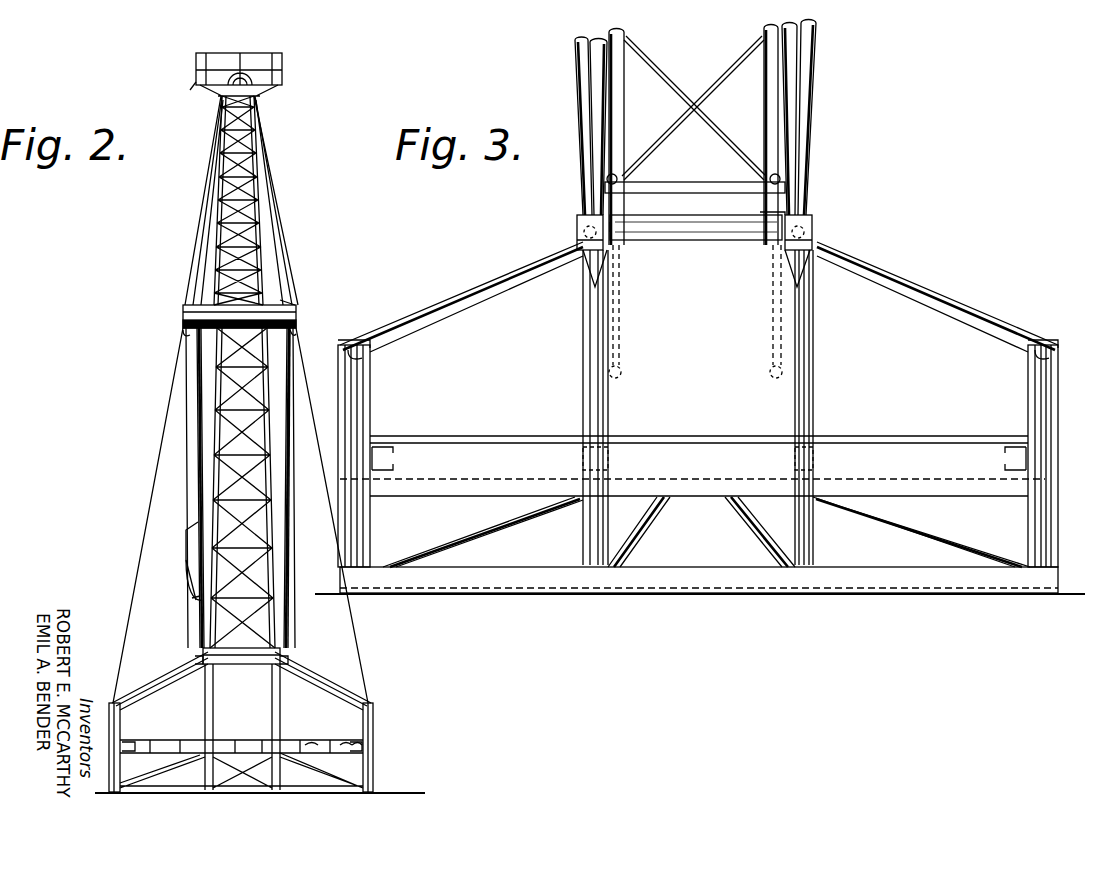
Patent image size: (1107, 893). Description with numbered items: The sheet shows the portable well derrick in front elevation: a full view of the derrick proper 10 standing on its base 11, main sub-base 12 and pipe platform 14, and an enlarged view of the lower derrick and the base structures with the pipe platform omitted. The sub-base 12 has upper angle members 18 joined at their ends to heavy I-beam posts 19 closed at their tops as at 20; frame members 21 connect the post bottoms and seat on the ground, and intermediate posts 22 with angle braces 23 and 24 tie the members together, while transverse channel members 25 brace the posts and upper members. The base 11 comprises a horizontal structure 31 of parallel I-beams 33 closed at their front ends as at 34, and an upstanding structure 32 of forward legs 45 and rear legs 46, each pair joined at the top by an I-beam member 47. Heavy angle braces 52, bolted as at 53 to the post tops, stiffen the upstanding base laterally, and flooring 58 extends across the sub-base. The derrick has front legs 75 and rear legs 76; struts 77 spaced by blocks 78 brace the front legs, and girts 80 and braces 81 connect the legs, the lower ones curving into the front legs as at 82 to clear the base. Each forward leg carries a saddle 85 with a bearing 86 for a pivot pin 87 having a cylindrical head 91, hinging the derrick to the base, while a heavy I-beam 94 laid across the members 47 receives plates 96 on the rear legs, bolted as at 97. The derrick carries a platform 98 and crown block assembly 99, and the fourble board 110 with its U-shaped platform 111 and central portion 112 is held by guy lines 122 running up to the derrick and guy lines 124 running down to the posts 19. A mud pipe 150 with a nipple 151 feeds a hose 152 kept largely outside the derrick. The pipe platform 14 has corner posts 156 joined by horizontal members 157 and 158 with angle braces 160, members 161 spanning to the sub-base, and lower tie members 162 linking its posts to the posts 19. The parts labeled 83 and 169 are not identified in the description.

In FIG. 2, the derrick proper 10 is at (187, 468).
In FIG. 3, the derrick proper 10 is at (812, 108).
In FIG. 3, the base 11 is at (814, 338).
In FIG. 2, the main sub-base 12 is at (120, 715).
In FIG. 3, the main sub-base 12 is at (1068, 512).
In FIG. 2, the pipe platform 14 is at (222, 245).
In FIG. 3, the upper structural members 18 is at (880, 475).
In FIG. 2, the upstanding posts 19 is at (373, 720).
In FIG. 3, the upstanding posts 19 is at (370, 410).
In FIG. 3, the closed upper ends 20 is at (370, 365).
In FIG. 3, the frame members 21 is at (510, 580).
In FIG. 3, the intermediate posts 22 is at (583, 538).
In FIG. 3, the angle braces 23 is at (468, 530).
In FIG. 3, the angle braces 24 is at (660, 520).
In FIG. 2, the channel members 25 is at (145, 738).
In FIG. 3, the channel members 25 is at (395, 462).
In FIG. 3, the horizontal base structure 31 is at (785, 463).
In FIG. 2, the upstanding base structure 32 is at (300, 685).
In FIG. 3, the upstanding base structure 32 is at (583, 372).
In FIG. 3, the horizontal structural members 33 is at (583, 460).
In FIG. 2, the closed front ends 34 is at (228, 742).
In FIG. 3, the closed front ends 34 is at (813, 460).
In FIG. 2, the forward legs 45 is at (215, 700).
In FIG. 3, the forward legs 45 is at (583, 318).
In FIG. 3, the rear legs 46 is at (583, 350).
In FIG. 3, the horizontal structural member 47 is at (582, 290).
In FIG. 2, the angle braces 52 is at (160, 678).
In FIG. 3, the angle braces 52 is at (448, 300).
In FIG. 3, the bolted connection 53 is at (345, 335).
In FIG. 3, the flooring extension 58 is at (690, 436).
In FIG. 2, the front legs 75 is at (214, 279).
In FIG. 3, the front legs 75 is at (592, 137).
In FIG. 3, the rear legs 76 is at (625, 120).
In FIG. 2, the struts 77 is at (196, 388).
In FIG. 3, the struts 77 is at (573, 58).
In FIG. 2, the blocks 78 is at (278, 500).
In FIG. 3, the girts 80 is at (714, 175).
In FIG. 2, the braces 81 is at (260, 590).
In FIG. 3, the braces 81 is at (700, 72).
In FIG. 2, the curved ends 82 is at (258, 605).
In FIG. 3, the curved ends 82 is at (635, 255).
In FIG. 3, the pin 83 is at (618, 178).
In FIG. 3, the saddle 85 is at (592, 265).
In FIG. 3, the bearing 86 is at (577, 222).
In FIG. 3, the pivot pin 87 is at (577, 236).
In FIG. 3, the cylindrical head 91 is at (760, 210).
In FIG. 2, the structural member 94 is at (240, 664).
In FIG. 3, the structural member 94 is at (700, 245).
In FIG. 3, the plates 96 is at (660, 218).
In FIG. 3, the bolts 97 is at (625, 215).
In FIG. 2, the platform 98 is at (190, 90).
In FIG. 2, the crown block assembly 99 is at (250, 62).
In FIG. 2, the fourble board 110 is at (183, 333).
In FIG. 2, the U-shaped platform 111 is at (300, 328).
In FIG. 2, the central platform portion 112 is at (280, 300).
In FIG. 2, the guy lines 122 is at (207, 208).
In FIG. 2, the guy lines 124 is at (318, 345).
In FIG. 2, the mud pipe 150 is at (192, 640).
In FIG. 2, the nipple 151 is at (188, 542).
In FIG. 2, the hose 152 is at (190, 600).
In FIG. 2, the corner posts 156 is at (373, 740).
In FIG. 2, the horizontal structural members 157 is at (312, 735).
In FIG. 2, the horizontal structural members 158 is at (315, 790).
In FIG. 2, the angle braces 160 is at (160, 770).
In FIG. 2, the horizontal structural members 161 is at (345, 735).
In FIG. 2, the lower tie members 162 is at (105, 775).
In FIG. 2, the footing 169 is at (188, 790).